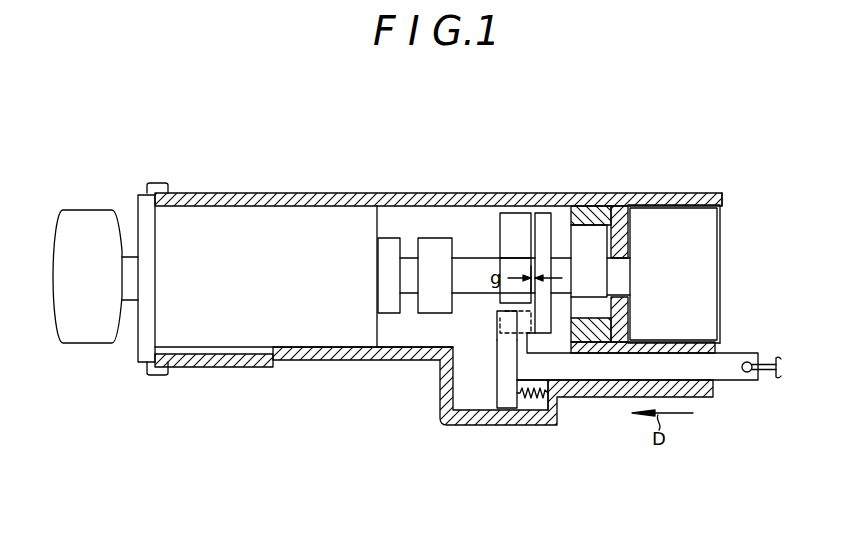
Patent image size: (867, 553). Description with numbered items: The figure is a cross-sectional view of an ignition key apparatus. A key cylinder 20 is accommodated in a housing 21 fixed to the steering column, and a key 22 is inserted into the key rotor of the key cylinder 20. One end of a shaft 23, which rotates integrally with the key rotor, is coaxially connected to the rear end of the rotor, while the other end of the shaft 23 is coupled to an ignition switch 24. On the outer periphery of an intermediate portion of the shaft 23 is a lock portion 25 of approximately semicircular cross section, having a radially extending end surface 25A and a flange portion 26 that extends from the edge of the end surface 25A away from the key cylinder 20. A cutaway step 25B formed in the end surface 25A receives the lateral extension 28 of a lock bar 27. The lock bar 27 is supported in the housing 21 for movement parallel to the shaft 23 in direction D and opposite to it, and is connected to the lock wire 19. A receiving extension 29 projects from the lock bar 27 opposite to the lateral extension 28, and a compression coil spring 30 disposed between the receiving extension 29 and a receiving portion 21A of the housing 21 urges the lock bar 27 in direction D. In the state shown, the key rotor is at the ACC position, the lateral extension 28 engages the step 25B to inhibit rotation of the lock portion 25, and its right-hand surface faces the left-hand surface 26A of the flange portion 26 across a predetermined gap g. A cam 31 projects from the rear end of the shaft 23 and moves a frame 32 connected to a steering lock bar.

The lock wire 19 is at (763, 380).
The key cylinder 20 is at (182, 195).
The housing 21 is at (177, 212).
The receiving portion 21A is at (545, 400).
The key 22 is at (90, 210).
The shaft 23 is at (462, 257).
The ignition switch 24 is at (677, 213).
The lock portion 25 is at (498, 230).
The end surface 25A is at (515, 220).
The cutaway step 25B is at (500, 303).
The flange portion 26 is at (543, 217).
The left-hand surface 26A is at (535, 322).
The lock bar 27 is at (612, 373).
The lateral extension 28 is at (493, 328).
The receiving extension 29 is at (493, 398).
The compression coil spring 30 is at (525, 402).
The cam 31 is at (598, 233).
The frame 32 is at (596, 209).